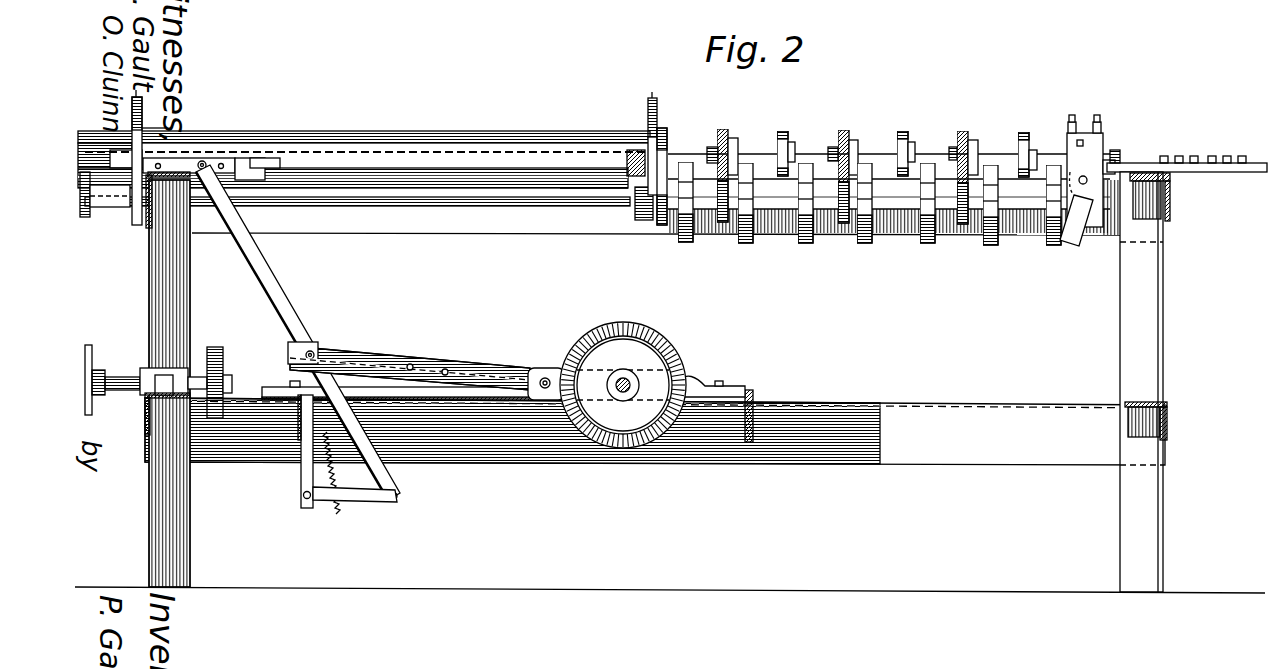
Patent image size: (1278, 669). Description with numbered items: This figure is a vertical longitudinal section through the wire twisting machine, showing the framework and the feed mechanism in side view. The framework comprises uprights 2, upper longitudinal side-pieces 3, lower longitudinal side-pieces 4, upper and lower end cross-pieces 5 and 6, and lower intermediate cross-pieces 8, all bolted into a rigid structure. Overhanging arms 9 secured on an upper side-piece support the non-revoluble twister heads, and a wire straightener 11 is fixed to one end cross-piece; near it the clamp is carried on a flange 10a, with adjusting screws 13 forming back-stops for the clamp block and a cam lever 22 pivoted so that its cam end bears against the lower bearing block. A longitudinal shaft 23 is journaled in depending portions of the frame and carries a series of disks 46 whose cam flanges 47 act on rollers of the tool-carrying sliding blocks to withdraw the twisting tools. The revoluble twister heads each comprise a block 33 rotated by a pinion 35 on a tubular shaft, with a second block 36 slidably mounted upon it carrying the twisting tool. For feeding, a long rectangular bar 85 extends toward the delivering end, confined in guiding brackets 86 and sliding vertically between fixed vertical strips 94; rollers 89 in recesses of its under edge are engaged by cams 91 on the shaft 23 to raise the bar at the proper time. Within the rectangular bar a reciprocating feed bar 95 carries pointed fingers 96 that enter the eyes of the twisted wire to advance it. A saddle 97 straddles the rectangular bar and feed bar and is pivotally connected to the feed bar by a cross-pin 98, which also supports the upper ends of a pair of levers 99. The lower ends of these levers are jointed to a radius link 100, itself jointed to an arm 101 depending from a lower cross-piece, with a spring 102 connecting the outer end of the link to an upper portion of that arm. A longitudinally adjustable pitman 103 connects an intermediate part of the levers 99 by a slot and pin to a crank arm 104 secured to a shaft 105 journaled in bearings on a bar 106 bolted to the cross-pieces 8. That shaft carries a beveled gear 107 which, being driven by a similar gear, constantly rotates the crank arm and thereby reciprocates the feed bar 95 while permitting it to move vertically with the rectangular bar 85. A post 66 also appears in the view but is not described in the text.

The uprights 2 is at (190, 310).
The upper longitudinal side-pieces 3 is at (512, 240).
The lower longitudinal side-pieces 4 is at (530, 462).
The upper end cross-pieces 5 is at (150, 228).
The lower end cross-pieces 6 is at (145, 420).
The lower intermediate cross-pieces 8 is at (301, 430).
The overhanging arms 9 is at (722, 129).
The flange of the arm 10a is at (1103, 140).
The wire straightener 11 is at (1195, 160).
The adjusting screws 13 is at (1100, 118).
The cam lever 22 is at (1082, 240).
The longitudinal shaft 23 is at (430, 206).
The block 33 is at (850, 135).
The pinion 35 is at (833, 147).
The second block 36 is at (862, 163).
The disks 46 is at (688, 243).
The cam flanges 47 is at (988, 245).
The post 66 is at (132, 118).
The rectangular bar 85 is at (560, 160).
The guiding brackets 86 is at (660, 108).
The rollers 89 is at (625, 192).
The cams 91 is at (85, 217).
The vertical strips 94 is at (510, 135).
The feed bar 95 is at (265, 165).
The fingers 96 is at (200, 160).
The saddle 97 is at (240, 175).
The cross-pin 98 is at (215, 158).
The levers 99 is at (290, 310).
The radius link 100 is at (355, 500).
The arm 101 is at (303, 498).
The spring 102 is at (380, 490).
The pitman 103 is at (385, 356).
The crank arm 104 is at (545, 368).
The shaft 105 is at (660, 350).
The bar 106 is at (715, 390).
The beveled gear 107 is at (628, 380).